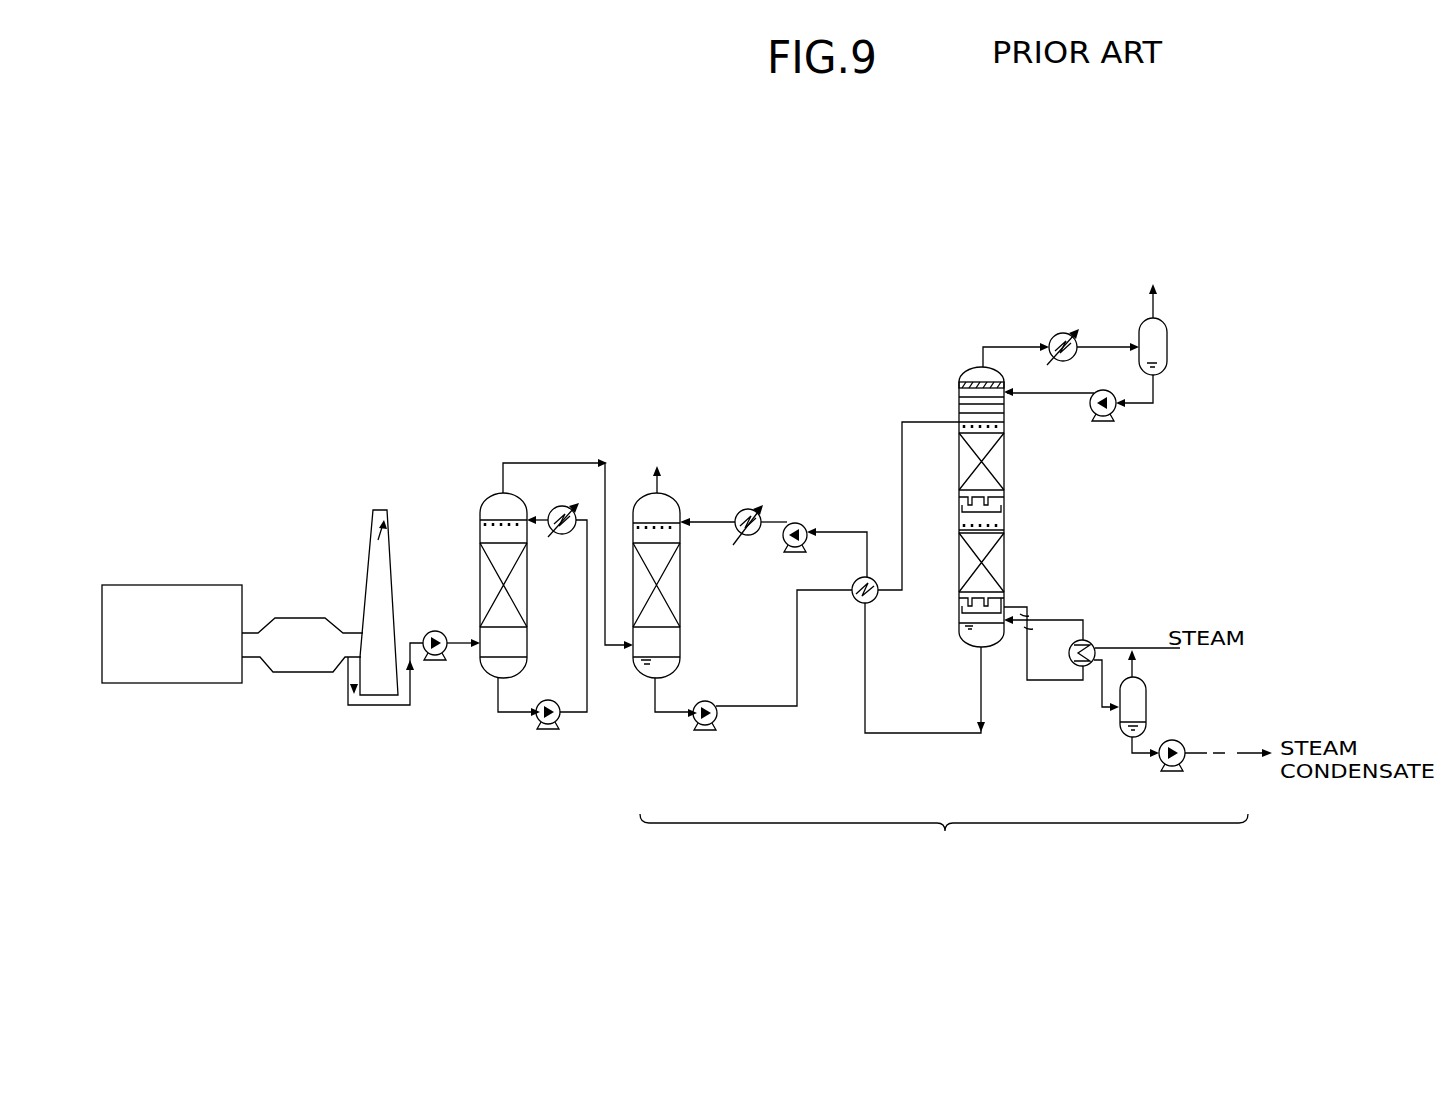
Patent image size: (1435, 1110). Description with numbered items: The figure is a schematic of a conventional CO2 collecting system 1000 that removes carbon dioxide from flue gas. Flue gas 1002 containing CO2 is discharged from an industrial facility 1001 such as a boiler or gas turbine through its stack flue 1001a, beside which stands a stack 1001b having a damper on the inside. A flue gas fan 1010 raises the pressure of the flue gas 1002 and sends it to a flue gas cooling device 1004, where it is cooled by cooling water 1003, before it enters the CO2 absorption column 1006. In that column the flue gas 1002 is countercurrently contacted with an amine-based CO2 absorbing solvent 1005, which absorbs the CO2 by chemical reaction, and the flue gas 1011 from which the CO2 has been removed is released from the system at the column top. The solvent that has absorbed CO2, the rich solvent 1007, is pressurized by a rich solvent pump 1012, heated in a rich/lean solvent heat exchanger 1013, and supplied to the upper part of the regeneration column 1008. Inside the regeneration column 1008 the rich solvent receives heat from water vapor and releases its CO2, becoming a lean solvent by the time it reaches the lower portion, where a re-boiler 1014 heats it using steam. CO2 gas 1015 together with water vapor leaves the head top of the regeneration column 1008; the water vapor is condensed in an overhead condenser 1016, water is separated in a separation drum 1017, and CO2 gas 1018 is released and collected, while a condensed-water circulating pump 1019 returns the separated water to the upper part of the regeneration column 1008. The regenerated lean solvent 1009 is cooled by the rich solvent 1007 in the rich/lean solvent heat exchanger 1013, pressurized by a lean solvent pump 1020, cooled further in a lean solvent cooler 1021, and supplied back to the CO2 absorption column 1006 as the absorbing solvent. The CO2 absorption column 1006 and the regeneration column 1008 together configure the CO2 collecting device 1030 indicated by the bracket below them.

The CO2 collecting system 1000 is at (648, 213).
The industrial facility 1001 is at (228, 585).
The stack flue 1001a is at (266, 663).
The stack 1001b is at (377, 547).
The flue gas 1002 is at (497, 402).
The cooling water 1003 is at (540, 590).
The flue gas cooling device 1004 is at (495, 493).
The CO2 absorbing solvent 1005 is at (710, 518).
The CO2 absorption column 1006 is at (668, 482).
The rich solvent 1007 is at (902, 460).
The regeneration column 1008 is at (967, 356).
The lean solvent 1009 is at (923, 733).
The flue gas fan 1010 is at (432, 656).
The flue gas from which CO2 is removed 1011 is at (653, 490).
The rich solvent pump 1012 is at (705, 727).
The rich/lean solvent heat exchanger 1013 is at (862, 603).
The re-boiler 1014 is at (1087, 643).
The CO2 gas with water vapor 1015 is at (1000, 345).
The overhead condenser 1016 is at (1062, 333).
The separation drum 1017 is at (1167, 348).
The CO2 gas 1018 is at (1203, 288).
The condensed-water circulating pump 1019 is at (1116, 408).
The lean solvent pump 1020 is at (800, 524).
The lean solvent cooler 1021 is at (740, 563).
The CO2 collecting device 1030 is at (944, 851).